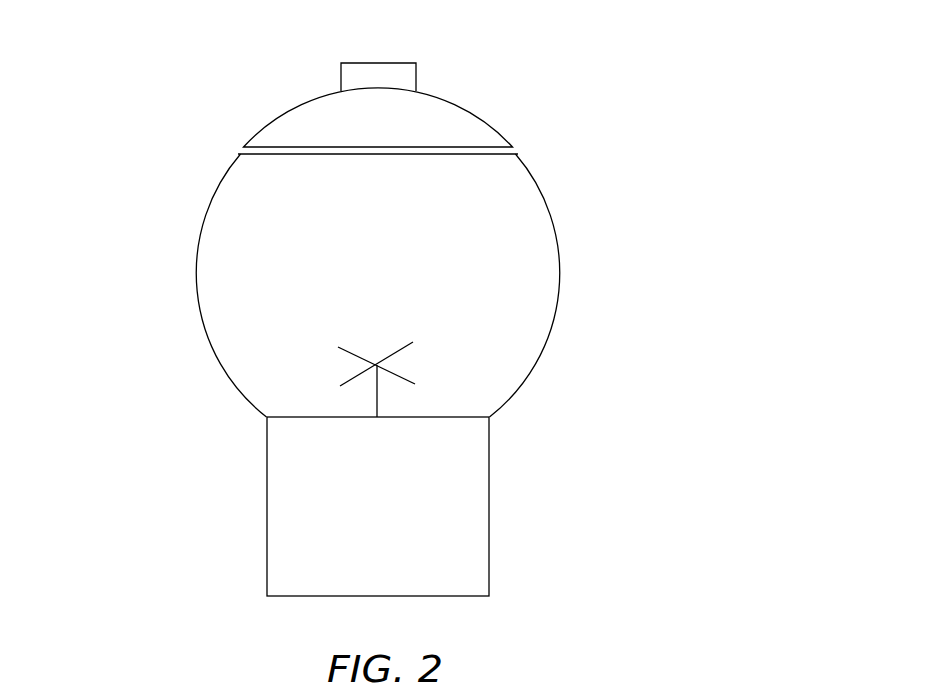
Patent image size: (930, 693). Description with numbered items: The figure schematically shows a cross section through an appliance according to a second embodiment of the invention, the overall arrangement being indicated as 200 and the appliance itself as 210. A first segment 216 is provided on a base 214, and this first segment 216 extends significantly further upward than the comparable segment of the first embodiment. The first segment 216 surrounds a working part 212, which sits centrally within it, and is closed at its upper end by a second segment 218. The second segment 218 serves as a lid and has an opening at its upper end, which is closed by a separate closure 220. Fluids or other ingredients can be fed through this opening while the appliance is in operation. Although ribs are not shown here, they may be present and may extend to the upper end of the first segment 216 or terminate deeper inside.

The environment / system 200 is at (645, 177).
The snow globe 210 is at (158, 276).
The working part 212 is at (404, 358).
The base 214 is at (489, 504).
The first segment 216 is at (562, 287).
The second segment 218 is at (493, 127).
The closure 220 is at (417, 73).